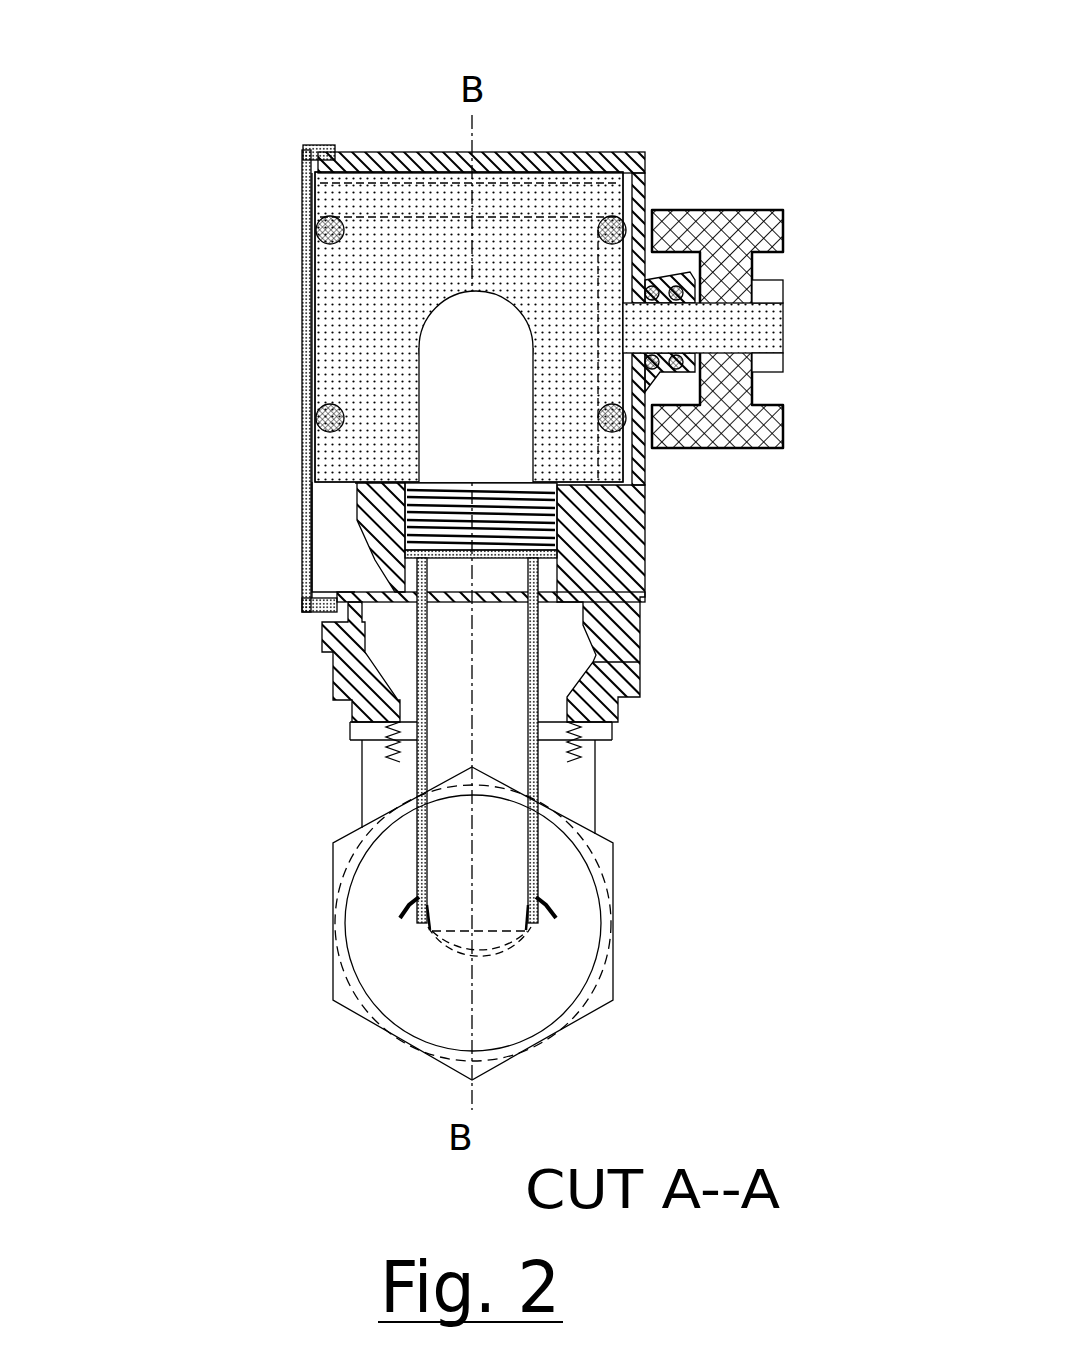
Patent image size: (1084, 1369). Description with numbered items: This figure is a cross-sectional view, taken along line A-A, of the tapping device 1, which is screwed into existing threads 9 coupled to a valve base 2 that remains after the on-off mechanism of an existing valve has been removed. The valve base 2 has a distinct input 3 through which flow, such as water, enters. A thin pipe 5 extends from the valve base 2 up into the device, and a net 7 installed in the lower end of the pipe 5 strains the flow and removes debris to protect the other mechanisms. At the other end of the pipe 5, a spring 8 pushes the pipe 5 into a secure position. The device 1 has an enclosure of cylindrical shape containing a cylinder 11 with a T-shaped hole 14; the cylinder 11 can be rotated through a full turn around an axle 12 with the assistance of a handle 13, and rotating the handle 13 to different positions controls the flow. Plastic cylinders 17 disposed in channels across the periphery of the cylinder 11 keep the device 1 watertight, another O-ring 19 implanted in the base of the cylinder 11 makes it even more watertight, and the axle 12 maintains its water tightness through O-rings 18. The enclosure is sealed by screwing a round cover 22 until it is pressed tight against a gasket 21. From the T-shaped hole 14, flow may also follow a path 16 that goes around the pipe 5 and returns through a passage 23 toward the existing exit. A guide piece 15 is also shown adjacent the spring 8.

The tapping device 1 is at (428, 152).
The valve base 2 is at (333, 997).
The input 3 is at (578, 923).
The pipe 5 is at (415, 860).
The net 7 is at (507, 948).
The spring 8 is at (642, 600).
The existing threads 9 is at (397, 738).
The cylinder 11 is at (530, 230).
The axle 12 is at (787, 308).
The handle 13 is at (735, 208).
The T-shaped hole 14 is at (455, 420).
The guide piece 15 is at (360, 520).
The path 16 is at (335, 563).
The plastic cylinders 17 is at (343, 197).
The O-rings 18 is at (692, 448).
The O-ring 19 is at (318, 237).
The gasket 21 is at (318, 148).
The round cover 22 is at (303, 485).
The passage 23 is at (550, 712).